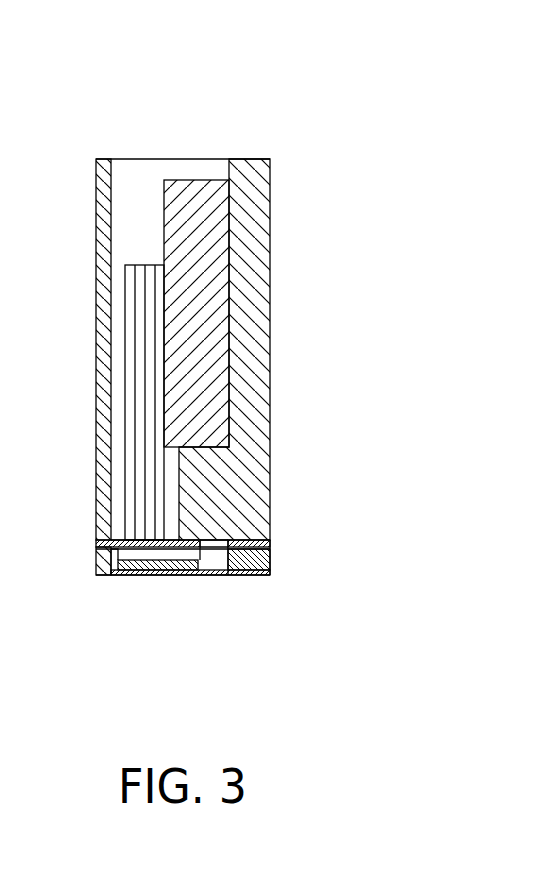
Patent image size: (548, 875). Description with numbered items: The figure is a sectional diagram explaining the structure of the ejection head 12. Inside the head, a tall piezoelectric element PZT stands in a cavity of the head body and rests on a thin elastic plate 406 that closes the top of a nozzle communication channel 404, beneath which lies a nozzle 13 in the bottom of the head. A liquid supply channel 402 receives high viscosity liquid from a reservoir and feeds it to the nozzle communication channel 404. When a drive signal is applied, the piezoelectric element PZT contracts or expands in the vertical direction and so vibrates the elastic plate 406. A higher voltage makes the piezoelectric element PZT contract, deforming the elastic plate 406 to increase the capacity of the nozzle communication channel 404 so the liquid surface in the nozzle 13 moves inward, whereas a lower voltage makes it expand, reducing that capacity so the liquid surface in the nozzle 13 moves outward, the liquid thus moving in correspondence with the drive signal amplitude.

The ejection head 12 is at (327, 191).
The piezoelectric element PZT is at (145, 265).
The elastic plate 406 is at (145, 542).
The liquid supply channel 402 is at (215, 563).
The nozzle communication channel 404 is at (158, 577).
The nozzle 13 is at (113, 577).